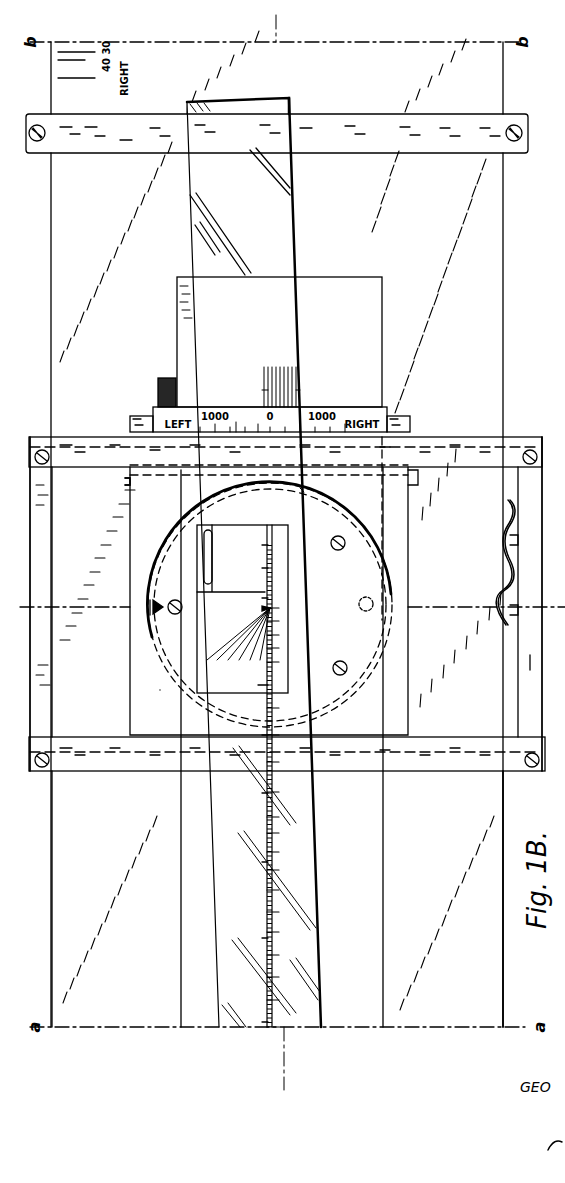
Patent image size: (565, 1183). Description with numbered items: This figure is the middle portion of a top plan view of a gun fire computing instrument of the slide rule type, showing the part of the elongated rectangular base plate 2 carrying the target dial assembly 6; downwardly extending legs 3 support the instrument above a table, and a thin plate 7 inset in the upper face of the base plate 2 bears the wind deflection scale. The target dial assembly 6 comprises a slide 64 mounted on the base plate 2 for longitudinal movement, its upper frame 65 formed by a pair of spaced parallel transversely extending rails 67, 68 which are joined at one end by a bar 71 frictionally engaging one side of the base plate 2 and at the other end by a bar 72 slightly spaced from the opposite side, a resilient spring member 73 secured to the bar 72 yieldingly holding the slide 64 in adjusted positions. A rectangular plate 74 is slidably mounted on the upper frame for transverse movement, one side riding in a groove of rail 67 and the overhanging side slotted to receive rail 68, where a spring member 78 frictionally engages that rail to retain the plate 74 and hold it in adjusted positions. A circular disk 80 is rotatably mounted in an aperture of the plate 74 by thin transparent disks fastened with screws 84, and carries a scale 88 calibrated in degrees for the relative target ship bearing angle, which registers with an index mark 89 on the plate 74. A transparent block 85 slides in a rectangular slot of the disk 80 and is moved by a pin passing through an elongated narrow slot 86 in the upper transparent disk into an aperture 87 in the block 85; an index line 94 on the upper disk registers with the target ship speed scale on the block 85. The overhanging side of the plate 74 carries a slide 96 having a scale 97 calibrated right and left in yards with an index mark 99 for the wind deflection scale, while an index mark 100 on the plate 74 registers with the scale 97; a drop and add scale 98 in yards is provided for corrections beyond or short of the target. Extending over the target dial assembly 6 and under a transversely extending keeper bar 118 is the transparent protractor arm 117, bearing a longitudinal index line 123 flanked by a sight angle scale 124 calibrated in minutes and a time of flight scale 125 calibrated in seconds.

The base plate 2 is at (504, 213).
The legs 3 is at (286, 24).
The target dial assembly 6 is at (48, 588).
The thin plate 7 is at (178, 282).
The slide 64 is at (141, 787).
The upper frame 65 is at (76, 785).
The rail 67 is at (480, 778).
The rail 68 is at (474, 437).
The bar 71 is at (55, 645).
The bar 72 is at (540, 660).
The resilient spring member 73 is at (506, 545).
The rectangular plate 74 is at (130, 560).
The spring member 78 is at (125, 482).
The circular disk 80 is at (394, 590).
The screws 84 is at (345, 548).
The transparent block 85 is at (198, 688).
The elongated narrow slot 86 is at (204, 572).
The aperture 87 is at (237, 648).
The scale 88 is at (158, 652).
The index mark 89 is at (265, 728).
The index line 94 is at (240, 600).
The slide 96 is at (158, 398).
The scale 97 is at (240, 430).
The drop and add scale 98 is at (264, 386).
The index mark 99 is at (300, 390).
The index mark 100 is at (304, 490).
The protractor arm 117 is at (293, 200).
The keeper bar 118 is at (398, 153).
The index line 123 is at (262, 842).
The sight angle scale 124 is at (330, 900).
The time of flight scale 125 is at (257, 935).